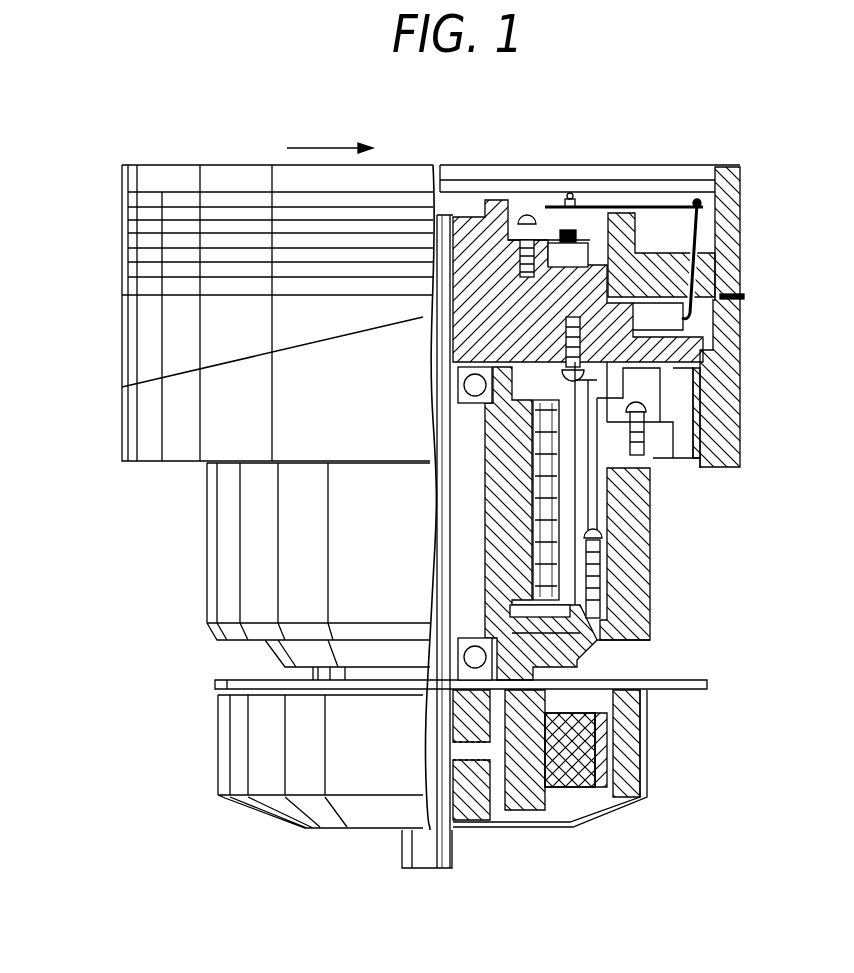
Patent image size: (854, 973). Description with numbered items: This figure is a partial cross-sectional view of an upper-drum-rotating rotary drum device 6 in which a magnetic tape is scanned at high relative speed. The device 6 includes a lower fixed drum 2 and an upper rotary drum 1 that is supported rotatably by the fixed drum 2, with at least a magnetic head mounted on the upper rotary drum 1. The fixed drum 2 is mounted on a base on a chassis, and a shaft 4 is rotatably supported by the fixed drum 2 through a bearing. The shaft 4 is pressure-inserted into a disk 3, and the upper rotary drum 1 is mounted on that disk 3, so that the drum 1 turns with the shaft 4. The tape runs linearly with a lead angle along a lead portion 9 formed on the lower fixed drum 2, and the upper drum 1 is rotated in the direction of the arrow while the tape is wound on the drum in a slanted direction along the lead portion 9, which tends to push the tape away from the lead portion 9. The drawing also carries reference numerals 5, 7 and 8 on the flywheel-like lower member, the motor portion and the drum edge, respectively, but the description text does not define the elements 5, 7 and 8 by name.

The upper rotary drum 1 is at (244, 464).
The lower fixed drum 2 is at (128, 362).
The disk 3 is at (710, 357).
The shaft 4 is at (432, 862).
The flywheel 5 is at (218, 775).
The rotary drum device 6 is at (424, 526).
The motor 7 is at (567, 648).
The tape guide edge 8 is at (122, 208).
The lead portion 9 is at (252, 358).